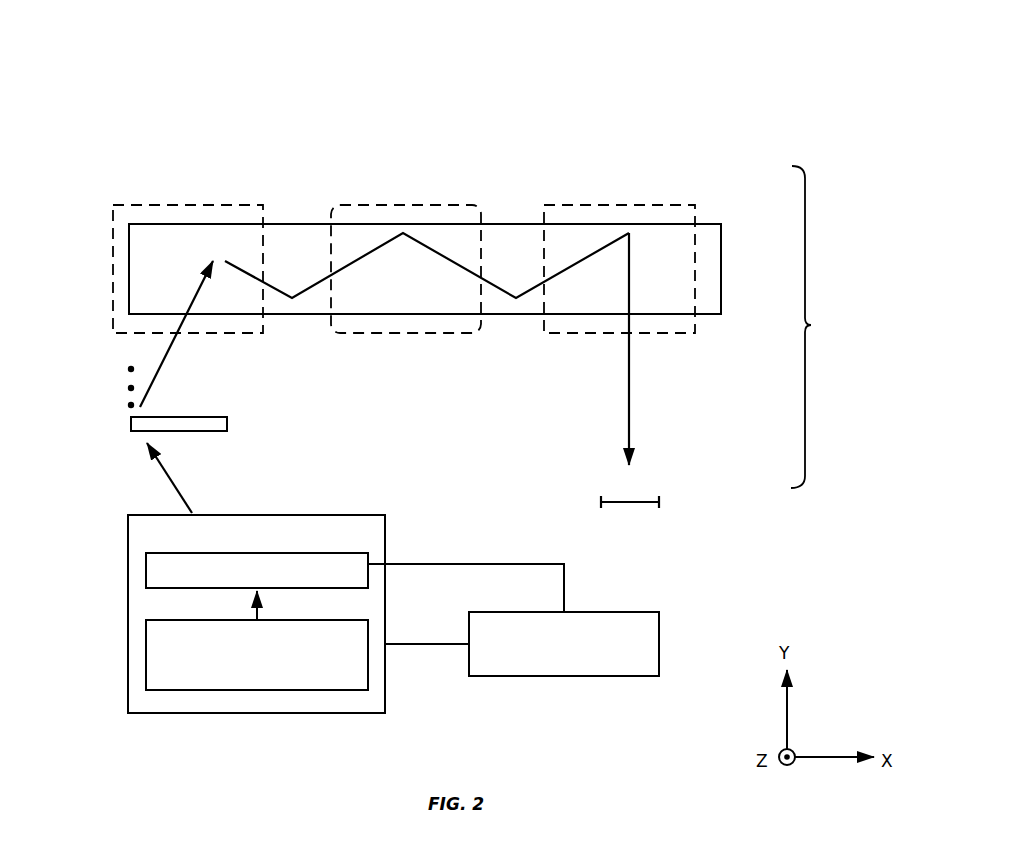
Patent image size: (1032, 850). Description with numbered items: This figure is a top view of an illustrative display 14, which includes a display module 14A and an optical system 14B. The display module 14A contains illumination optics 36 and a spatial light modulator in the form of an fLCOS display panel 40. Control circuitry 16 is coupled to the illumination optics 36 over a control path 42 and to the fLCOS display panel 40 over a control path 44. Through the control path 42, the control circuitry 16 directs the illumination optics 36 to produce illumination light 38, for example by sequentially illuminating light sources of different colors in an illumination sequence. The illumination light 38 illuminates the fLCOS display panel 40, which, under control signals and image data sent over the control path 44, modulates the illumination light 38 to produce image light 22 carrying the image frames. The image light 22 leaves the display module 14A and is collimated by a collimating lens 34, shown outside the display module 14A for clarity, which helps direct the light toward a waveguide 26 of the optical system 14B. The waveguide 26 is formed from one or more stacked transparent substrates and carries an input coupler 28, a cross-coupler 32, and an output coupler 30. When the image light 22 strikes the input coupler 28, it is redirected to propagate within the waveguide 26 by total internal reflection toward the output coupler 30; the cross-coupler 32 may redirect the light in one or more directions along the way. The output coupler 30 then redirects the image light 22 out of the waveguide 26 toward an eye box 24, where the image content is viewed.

The display 14 is at (634, 64).
The display module 14A is at (128, 540).
The optical system 14B is at (822, 327).
The control circuitry 16 is at (659, 640).
The image light 22 is at (162, 363).
The eye box 24 is at (633, 503).
The waveguide 26 is at (721, 268).
The input coupler 28 is at (185, 203).
The output coupler 30 is at (618, 203).
The cross-coupler 32 is at (406, 203).
The collimating lens 34 is at (236, 421).
The illumination optics 36 is at (146, 653).
The illumination light 38 is at (258, 605).
The fLCOS display panel 40 is at (368, 578).
The control path 42 is at (432, 645).
The control path 44 is at (451, 563).